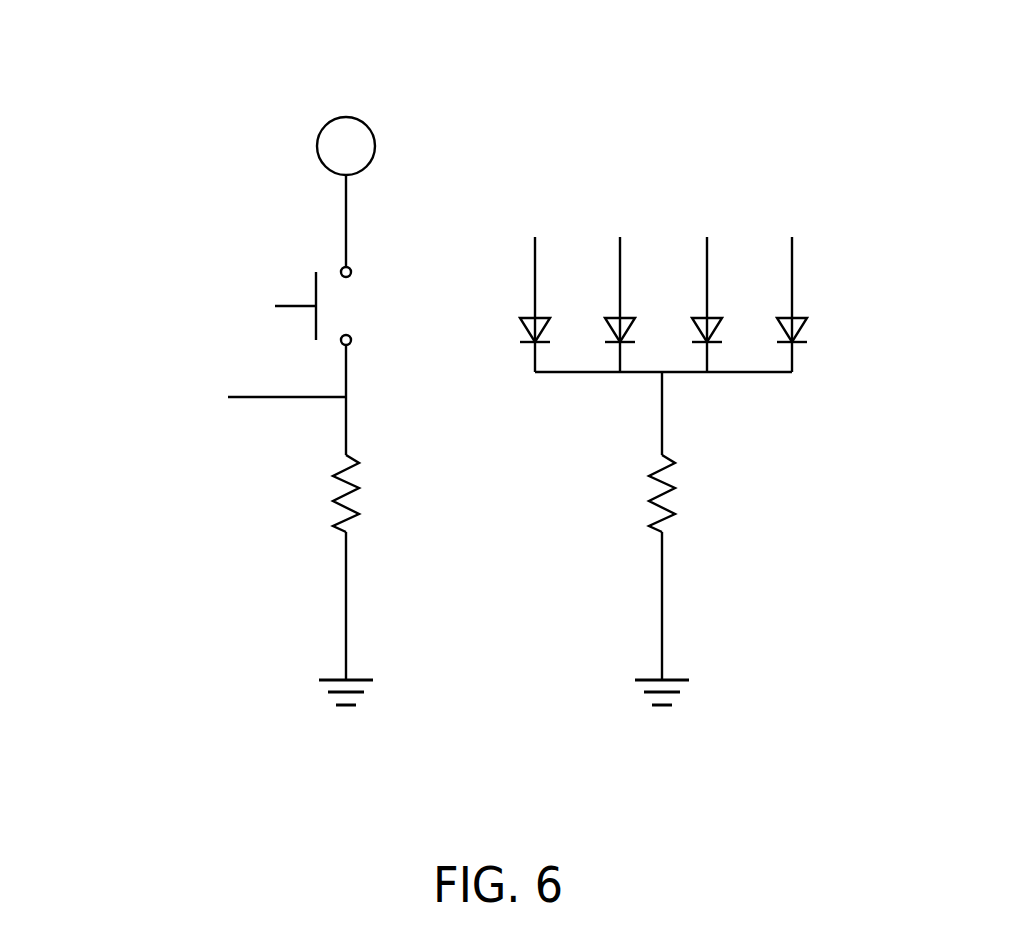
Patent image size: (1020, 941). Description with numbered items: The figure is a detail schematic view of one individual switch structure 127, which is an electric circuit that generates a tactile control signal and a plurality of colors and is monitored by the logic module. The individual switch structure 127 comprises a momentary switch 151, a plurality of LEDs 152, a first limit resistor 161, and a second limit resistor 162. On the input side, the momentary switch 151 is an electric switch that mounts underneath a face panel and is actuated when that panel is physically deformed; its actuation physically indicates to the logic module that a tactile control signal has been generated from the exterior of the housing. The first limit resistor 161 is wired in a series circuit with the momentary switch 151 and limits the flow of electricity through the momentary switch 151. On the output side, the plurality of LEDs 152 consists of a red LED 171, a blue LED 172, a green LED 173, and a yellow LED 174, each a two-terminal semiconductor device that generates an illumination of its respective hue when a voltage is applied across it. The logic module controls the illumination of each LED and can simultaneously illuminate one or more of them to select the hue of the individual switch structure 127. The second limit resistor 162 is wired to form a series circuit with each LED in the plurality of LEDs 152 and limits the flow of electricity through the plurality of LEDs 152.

The individual switch structure 127 is at (200, 108).
The momentary switch 151 is at (348, 312).
The plurality of LEDs 152 is at (820, 331).
The first limit resistor 161 is at (360, 501).
The second limit resistor 162 is at (668, 501).
The red LED 171 is at (518, 331).
The blue LED 172 is at (605, 327).
The green LED 173 is at (698, 318).
The yellow LED 174 is at (781, 313).